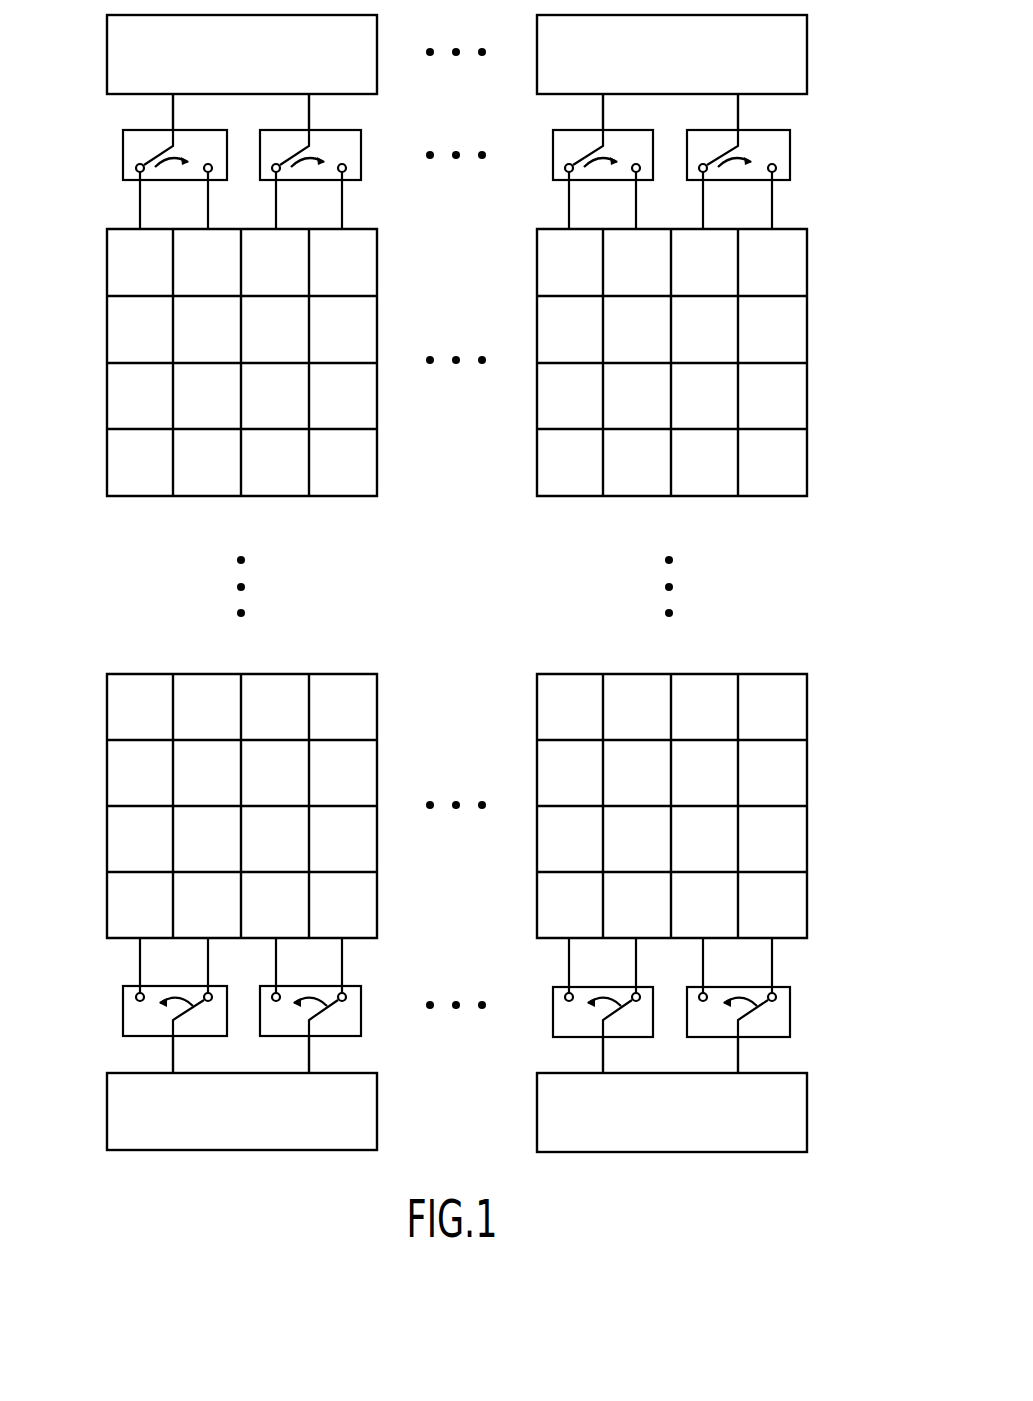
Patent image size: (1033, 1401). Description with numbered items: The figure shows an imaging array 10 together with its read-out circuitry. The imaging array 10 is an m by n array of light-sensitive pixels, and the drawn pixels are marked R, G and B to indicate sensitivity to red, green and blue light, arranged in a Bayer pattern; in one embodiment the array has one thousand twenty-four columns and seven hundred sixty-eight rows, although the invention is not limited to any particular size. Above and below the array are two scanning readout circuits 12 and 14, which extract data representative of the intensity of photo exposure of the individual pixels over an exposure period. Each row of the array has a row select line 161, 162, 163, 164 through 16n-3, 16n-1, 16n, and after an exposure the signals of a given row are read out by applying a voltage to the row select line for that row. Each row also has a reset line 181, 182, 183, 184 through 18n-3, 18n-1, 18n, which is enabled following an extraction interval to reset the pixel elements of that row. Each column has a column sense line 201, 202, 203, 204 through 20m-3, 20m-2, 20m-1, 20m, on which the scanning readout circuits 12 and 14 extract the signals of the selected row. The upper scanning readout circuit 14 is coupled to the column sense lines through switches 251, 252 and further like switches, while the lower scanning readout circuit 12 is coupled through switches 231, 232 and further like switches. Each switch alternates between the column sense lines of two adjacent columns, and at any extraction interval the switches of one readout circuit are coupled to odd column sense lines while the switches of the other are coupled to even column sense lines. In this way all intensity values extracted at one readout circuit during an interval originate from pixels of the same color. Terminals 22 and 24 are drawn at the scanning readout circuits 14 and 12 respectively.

The imaging array 10 is at (768, 516).
The scanning readout circuit 12 is at (807, 1090).
The scanning readout circuit 14 is at (807, 30).
The upper driver input terminal 22 is at (807, 57).
The lower driver input terminal 24 is at (807, 1110).
The row select line 161 is at (807, 279).
The row select line 162 is at (807, 346).
The row select line 163 is at (807, 412).
The row select line 164 is at (807, 478).
The row select line 16n-3 is at (836, 786).
The row select line 16n-1 is at (807, 852).
The row select line 16n is at (807, 918).
The reset line 181 is at (807, 252).
The reset line 182 is at (807, 318).
The reset line 183 is at (807, 384).
The reset line 184 is at (807, 450).
The reset line 18n-3 is at (836, 757).
The reset line 18n-1 is at (807, 823).
The reset line 18n is at (807, 890).
The column sense line 201 is at (140, 958).
The column sense line 202 is at (208, 952).
The column sense line 203 is at (276, 952).
The column sense line 204 is at (342, 952).
The column sense line 20m-3 is at (569, 966).
The column sense line 20m-2 is at (636, 965).
The column sense line 20m-1 is at (825, 955).
The column sense line 20m is at (823, 978).
The switch 231 is at (123, 1008).
The switch 232 is at (361, 1010).
The switch 251 is at (123, 150).
The switch 252 is at (361, 162).